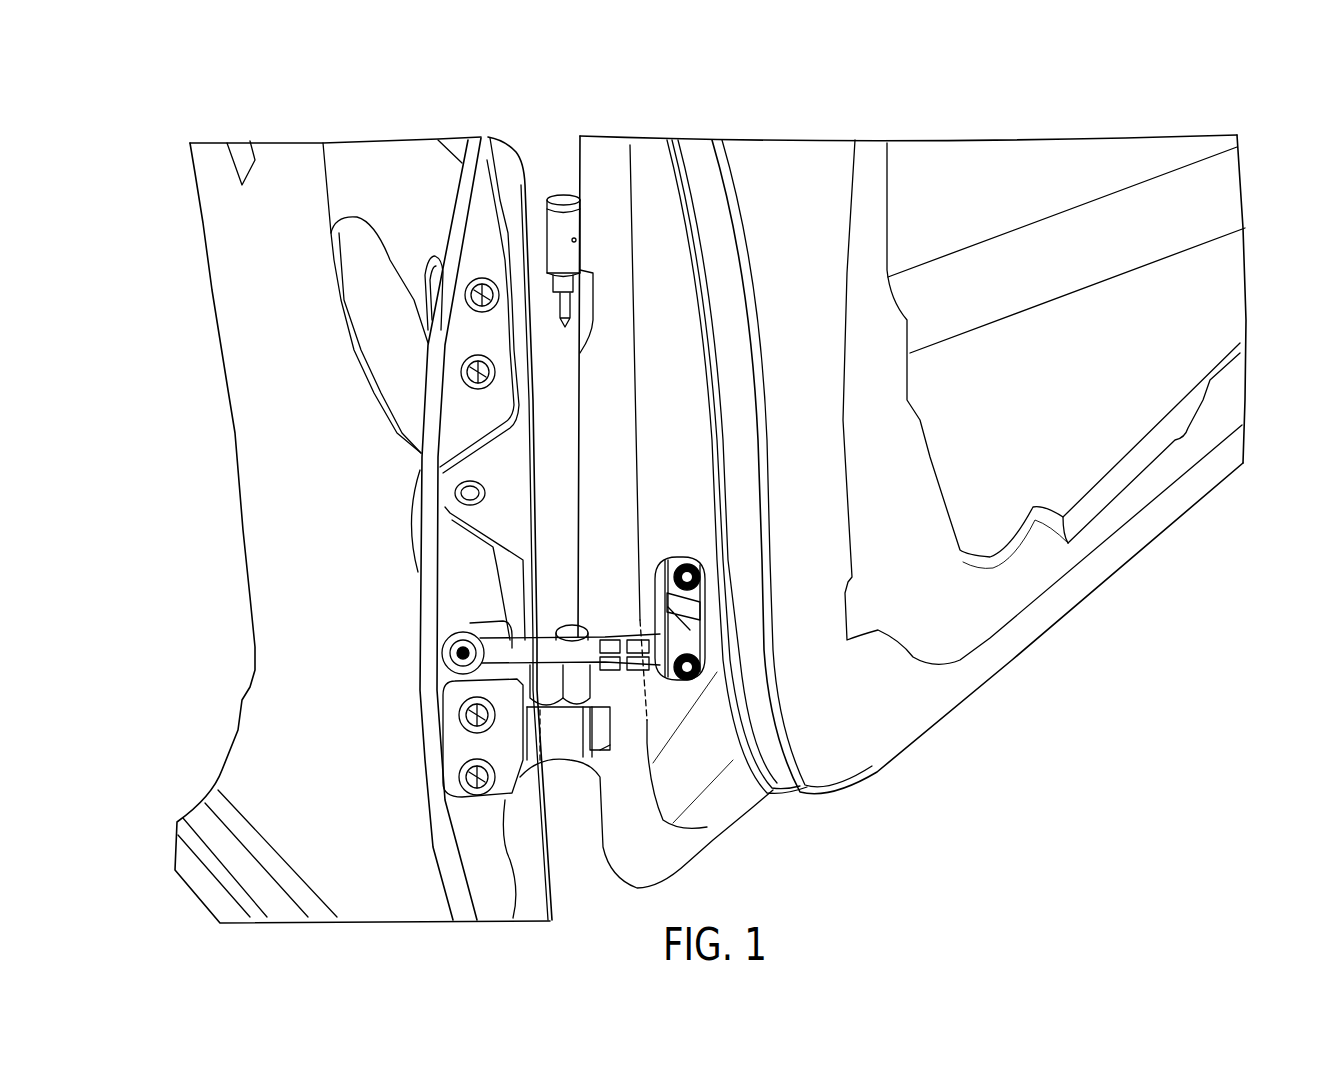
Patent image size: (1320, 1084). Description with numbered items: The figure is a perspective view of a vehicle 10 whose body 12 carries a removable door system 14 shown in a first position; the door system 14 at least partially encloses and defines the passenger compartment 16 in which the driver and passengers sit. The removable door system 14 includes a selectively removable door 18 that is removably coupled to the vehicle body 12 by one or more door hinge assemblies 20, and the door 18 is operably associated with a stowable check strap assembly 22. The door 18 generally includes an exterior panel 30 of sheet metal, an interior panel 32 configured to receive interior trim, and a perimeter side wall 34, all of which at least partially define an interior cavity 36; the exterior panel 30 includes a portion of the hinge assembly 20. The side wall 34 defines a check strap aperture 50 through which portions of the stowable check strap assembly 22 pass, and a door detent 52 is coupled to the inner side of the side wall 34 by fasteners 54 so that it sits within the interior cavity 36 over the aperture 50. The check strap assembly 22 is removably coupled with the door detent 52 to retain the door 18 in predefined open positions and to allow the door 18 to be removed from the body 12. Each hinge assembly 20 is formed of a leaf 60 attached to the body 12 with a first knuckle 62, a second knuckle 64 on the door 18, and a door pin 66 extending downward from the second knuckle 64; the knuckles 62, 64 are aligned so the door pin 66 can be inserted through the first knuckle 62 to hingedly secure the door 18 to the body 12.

The vehicle 10 is at (358, 124).
The body 12 is at (177, 213).
The removable door system 14 is at (709, 112).
The passenger compartment 16 is at (191, 757).
The removable door 18 is at (787, 157).
The door hinge assembly 20 is at (559, 804).
The stowable check strap assembly 22 is at (547, 615).
The exterior panel 30 is at (630, 887).
The interior panel 32 is at (898, 718).
The perimeter side wall 34 is at (733, 787).
The interior cavity 36 is at (1229, 288).
The check strap aperture 50 is at (668, 563).
The door detent 52 is at (668, 607).
The fasteners 54 is at (687, 563).
The leaf 60 is at (503, 777).
The first knuckle 62 is at (585, 763).
The second knuckle 64 is at (567, 200).
The door pin 66 is at (565, 330).